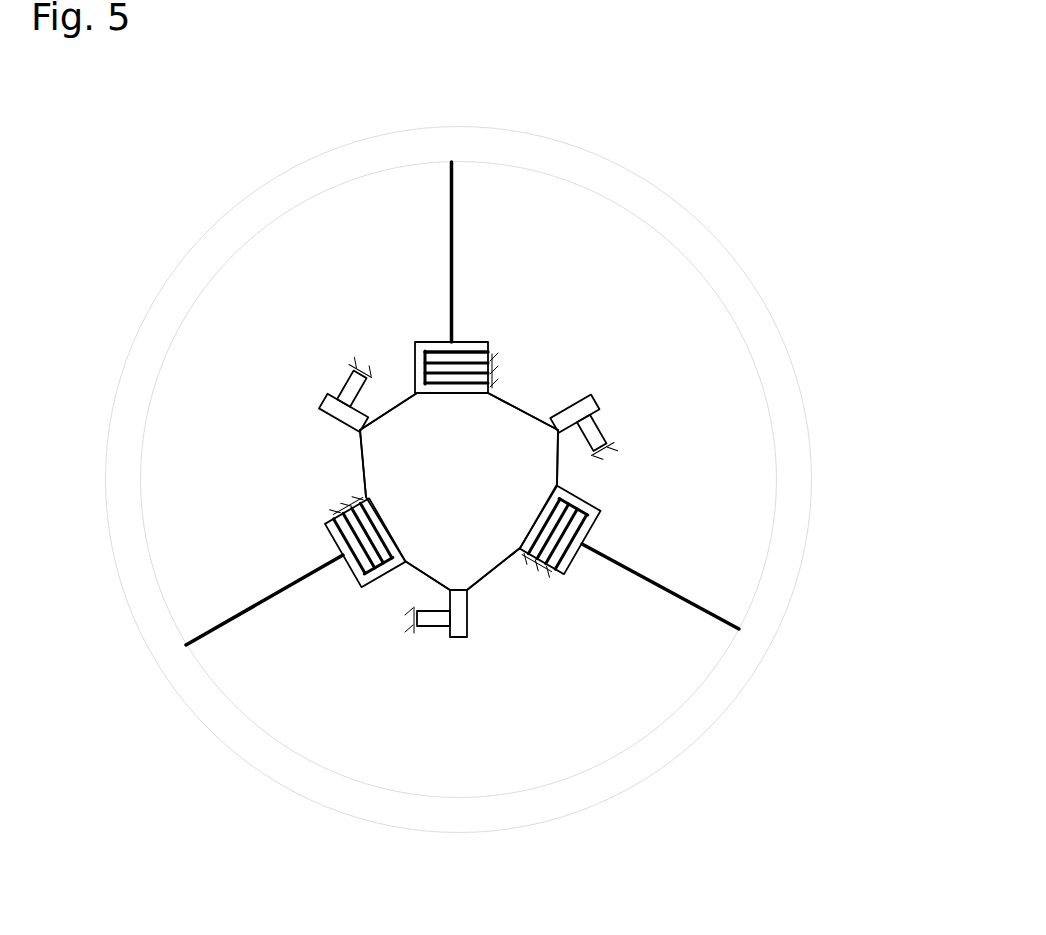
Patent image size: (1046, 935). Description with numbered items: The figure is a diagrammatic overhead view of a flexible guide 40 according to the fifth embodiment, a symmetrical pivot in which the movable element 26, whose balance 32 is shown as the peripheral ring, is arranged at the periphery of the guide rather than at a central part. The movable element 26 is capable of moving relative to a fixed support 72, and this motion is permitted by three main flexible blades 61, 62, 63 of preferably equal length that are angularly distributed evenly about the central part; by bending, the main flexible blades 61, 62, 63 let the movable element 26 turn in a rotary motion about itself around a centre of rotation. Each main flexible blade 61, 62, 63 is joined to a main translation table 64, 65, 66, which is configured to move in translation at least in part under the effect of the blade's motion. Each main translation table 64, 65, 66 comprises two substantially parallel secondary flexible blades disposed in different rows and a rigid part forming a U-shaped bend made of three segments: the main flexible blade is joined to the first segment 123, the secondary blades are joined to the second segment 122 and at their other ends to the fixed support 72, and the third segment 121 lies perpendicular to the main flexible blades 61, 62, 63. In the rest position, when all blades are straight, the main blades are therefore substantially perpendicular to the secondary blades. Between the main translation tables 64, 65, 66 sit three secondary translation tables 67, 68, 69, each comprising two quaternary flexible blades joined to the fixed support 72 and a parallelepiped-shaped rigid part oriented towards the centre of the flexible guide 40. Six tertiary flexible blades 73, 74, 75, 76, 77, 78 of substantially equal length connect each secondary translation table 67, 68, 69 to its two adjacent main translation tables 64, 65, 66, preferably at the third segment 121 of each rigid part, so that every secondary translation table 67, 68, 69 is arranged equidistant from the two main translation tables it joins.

The movable element 26 is at (798, 290).
The balance 32 is at (136, 368).
The flexible guide 40 is at (780, 147).
The main flexible blade 61 is at (450, 207).
The main flexible blade 62 is at (668, 594).
The main flexible blade 63 is at (237, 617).
The main translation table 64 is at (305, 538).
The main translation table 65 is at (422, 320).
The main translation table 66 is at (612, 533).
The secondary translation table 67 is at (618, 408).
The secondary translation table 68 is at (435, 648).
The secondary translation table 69 is at (300, 382).
The fixed support 72 is at (497, 363).
The tertiary flexible blade 73 is at (400, 385).
The tertiary flexible blade 74 is at (520, 402).
The tertiary flexible blade 75 is at (560, 470).
The tertiary flexible blade 76 is at (477, 587).
The tertiary flexible blade 77 is at (413, 573).
The tertiary flexible blade 78 is at (363, 453).
The third segment 121 is at (490, 388).
The second segment 122 is at (413, 363).
The first segment 123 is at (472, 342).